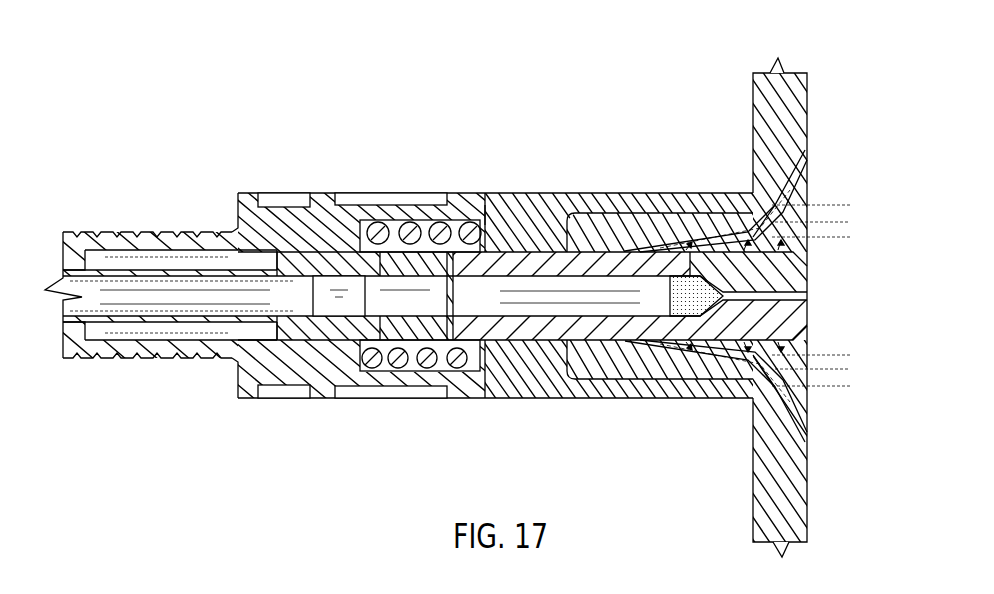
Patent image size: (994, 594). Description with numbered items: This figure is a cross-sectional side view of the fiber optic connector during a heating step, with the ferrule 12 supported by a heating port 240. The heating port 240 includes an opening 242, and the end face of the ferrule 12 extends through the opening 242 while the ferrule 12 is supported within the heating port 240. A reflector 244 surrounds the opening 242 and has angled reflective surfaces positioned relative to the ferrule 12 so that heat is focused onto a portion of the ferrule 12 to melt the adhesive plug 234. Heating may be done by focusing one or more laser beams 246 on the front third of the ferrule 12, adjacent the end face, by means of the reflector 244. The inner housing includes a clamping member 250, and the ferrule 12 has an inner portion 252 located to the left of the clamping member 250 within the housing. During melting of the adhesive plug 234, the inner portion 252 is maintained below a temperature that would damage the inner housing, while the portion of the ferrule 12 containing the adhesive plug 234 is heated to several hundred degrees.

The heating port 240 is at (800, 100).
The reflector 244 is at (798, 165).
The opening 242 is at (817, 187).
The laser beams 246 is at (835, 205).
The clamping member 250 is at (540, 228).
The inner portion 252 is at (563, 398).
The adhesive plug 234 is at (690, 343).
The ferrule 12 is at (716, 340).